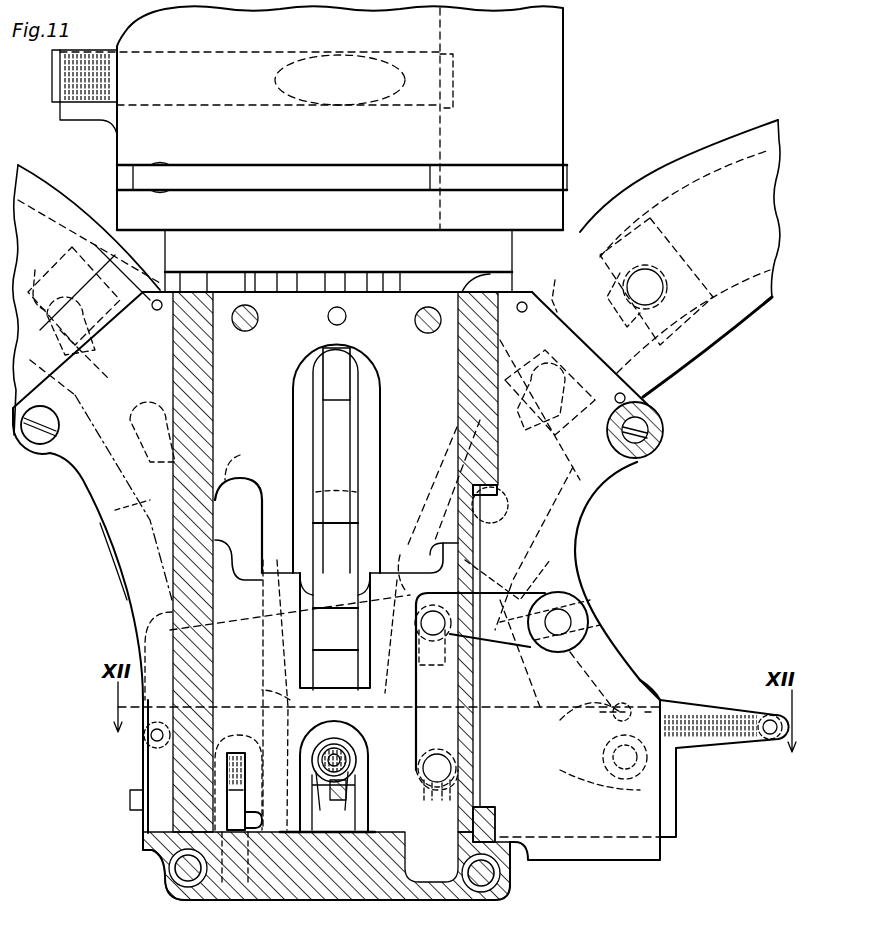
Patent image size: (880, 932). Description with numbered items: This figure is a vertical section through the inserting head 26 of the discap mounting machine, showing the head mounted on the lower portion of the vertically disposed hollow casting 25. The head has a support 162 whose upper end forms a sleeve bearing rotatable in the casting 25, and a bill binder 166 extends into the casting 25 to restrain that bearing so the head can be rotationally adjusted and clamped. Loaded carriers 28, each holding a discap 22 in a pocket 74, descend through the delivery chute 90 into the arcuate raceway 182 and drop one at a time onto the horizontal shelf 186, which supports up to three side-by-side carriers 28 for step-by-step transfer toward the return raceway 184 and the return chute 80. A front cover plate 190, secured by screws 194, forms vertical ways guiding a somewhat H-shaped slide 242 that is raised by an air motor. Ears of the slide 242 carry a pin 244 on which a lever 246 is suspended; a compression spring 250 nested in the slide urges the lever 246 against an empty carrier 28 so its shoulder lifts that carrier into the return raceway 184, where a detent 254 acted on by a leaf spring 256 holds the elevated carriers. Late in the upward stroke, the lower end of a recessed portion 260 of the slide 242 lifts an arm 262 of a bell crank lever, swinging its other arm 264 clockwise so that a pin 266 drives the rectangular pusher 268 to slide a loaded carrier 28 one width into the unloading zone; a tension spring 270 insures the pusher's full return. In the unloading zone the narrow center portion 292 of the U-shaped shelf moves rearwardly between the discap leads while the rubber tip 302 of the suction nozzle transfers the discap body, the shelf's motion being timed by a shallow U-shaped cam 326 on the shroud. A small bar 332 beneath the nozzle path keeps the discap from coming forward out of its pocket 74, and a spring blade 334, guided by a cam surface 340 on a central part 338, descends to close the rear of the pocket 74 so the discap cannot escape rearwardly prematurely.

The discap 22 is at (615, 286).
The hollow casting 25 is at (563, 133).
The inserting head 26 is at (660, 549).
The carrier 28 is at (290, 702).
The pocket 74 is at (84, 300).
The chute 80 is at (55, 195).
The delivery chute 90 is at (700, 160).
The support 162 is at (512, 248).
The bill binder 166 is at (282, 60).
The arcuate raceway 182 is at (548, 470).
The arcuate raceway 184 is at (112, 510).
The horizontal shelf 186 is at (543, 838).
The front cover plate 190 is at (118, 552).
The screws 194 is at (176, 878).
The H-shaped slide 242 is at (332, 690).
The pin 244 is at (235, 822).
The lever 246 is at (228, 800).
The compression spring 250 is at (227, 770).
The detent 254 is at (148, 628).
The leaf spring 256 is at (143, 750).
The recessed portion 260 is at (416, 686).
The arm 262 is at (515, 648).
The arm 264 is at (615, 670).
The pin 266 is at (610, 772).
The rectangular pusher 268 is at (577, 660).
The tension spring 270 is at (650, 690).
The center portion 292 is at (334, 776).
The rubber tip 302 is at (350, 760).
The cam 326 is at (337, 280).
The small bar 332 is at (357, 790).
The spring blade 334 is at (336, 525).
The central part 338 is at (355, 528).
The cam surface 340 is at (352, 637).